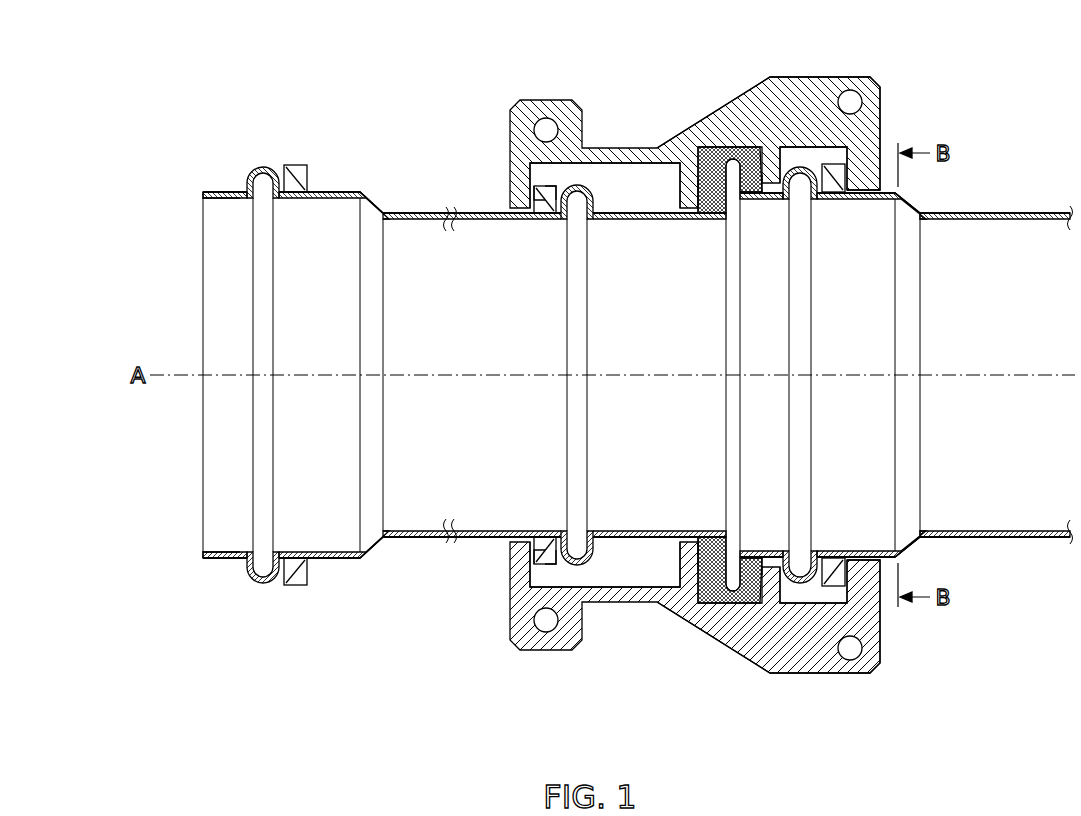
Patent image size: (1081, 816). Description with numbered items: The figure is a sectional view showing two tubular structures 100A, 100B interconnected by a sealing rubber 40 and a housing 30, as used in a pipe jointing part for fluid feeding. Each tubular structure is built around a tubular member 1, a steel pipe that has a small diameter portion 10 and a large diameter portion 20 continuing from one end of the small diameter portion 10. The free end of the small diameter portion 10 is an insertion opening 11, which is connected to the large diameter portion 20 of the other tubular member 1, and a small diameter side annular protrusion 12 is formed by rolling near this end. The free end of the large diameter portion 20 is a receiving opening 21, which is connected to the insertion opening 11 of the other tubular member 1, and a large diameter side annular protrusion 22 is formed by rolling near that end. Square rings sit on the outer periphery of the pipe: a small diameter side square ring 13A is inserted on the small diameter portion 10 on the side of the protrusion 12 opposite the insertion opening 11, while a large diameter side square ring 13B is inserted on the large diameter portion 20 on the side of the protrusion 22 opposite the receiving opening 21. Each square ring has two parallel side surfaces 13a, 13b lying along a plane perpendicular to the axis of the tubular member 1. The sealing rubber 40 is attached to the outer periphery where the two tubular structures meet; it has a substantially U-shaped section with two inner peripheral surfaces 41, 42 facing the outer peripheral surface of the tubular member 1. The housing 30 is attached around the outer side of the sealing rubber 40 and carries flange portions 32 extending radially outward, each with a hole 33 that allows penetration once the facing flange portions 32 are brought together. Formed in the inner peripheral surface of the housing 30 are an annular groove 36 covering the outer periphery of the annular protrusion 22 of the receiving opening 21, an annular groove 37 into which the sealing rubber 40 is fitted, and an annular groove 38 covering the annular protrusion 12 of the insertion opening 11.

The tubular member 1 is at (435, 658).
The small diameter portion 10 is at (422, 540).
The insertion opening 11 is at (722, 217).
The small diameter side annular protrusion 12 is at (578, 184).
The small diameter side square ring 13A is at (536, 550).
The side surface 13a is at (526, 548).
The side surface 13b is at (556, 546).
The large diameter side square ring 13B is at (293, 587).
The large diameter portion 20 is at (336, 560).
The receiving opening 21 is at (213, 196).
The large diameter side annular protrusion 22 is at (262, 172).
The housing 30 is at (835, 77).
The flange portion 32 is at (858, 136).
The hole 33 is at (540, 129).
The annular groove 36 is at (834, 172).
The annular groove 37 is at (737, 160).
The annular groove 38 is at (622, 165).
The sealing rubber 40 is at (700, 150).
The inner peripheral surface 41 is at (710, 215).
The inner peripheral surface 42 is at (749, 199).
The tubular structure 100A is at (268, 703).
The tubular structure 100B is at (787, 745).